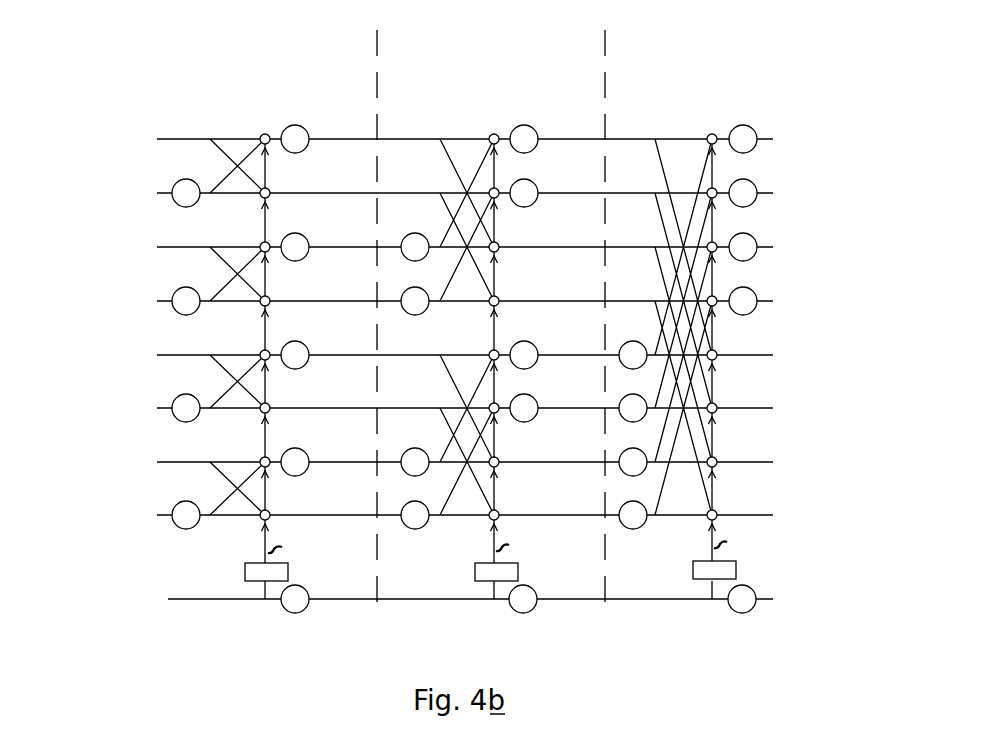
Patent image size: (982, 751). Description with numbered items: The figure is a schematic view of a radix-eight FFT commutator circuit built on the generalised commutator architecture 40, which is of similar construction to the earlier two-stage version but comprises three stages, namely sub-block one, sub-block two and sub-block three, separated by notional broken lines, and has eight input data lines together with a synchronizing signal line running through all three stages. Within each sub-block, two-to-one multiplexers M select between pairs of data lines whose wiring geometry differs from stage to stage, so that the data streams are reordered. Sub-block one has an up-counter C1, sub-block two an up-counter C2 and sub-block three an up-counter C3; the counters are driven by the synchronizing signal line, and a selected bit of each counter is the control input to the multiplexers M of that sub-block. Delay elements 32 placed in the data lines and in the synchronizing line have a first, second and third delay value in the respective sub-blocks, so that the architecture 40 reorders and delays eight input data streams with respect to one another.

The architecture 40 is at (480, 335).
The delay elements 32 is at (512, 126).
The multiplexers M is at (268, 350).
The up-counter C1 is at (245, 576).
The up-counter C2 is at (483, 583).
The up-counter C3 is at (694, 570).